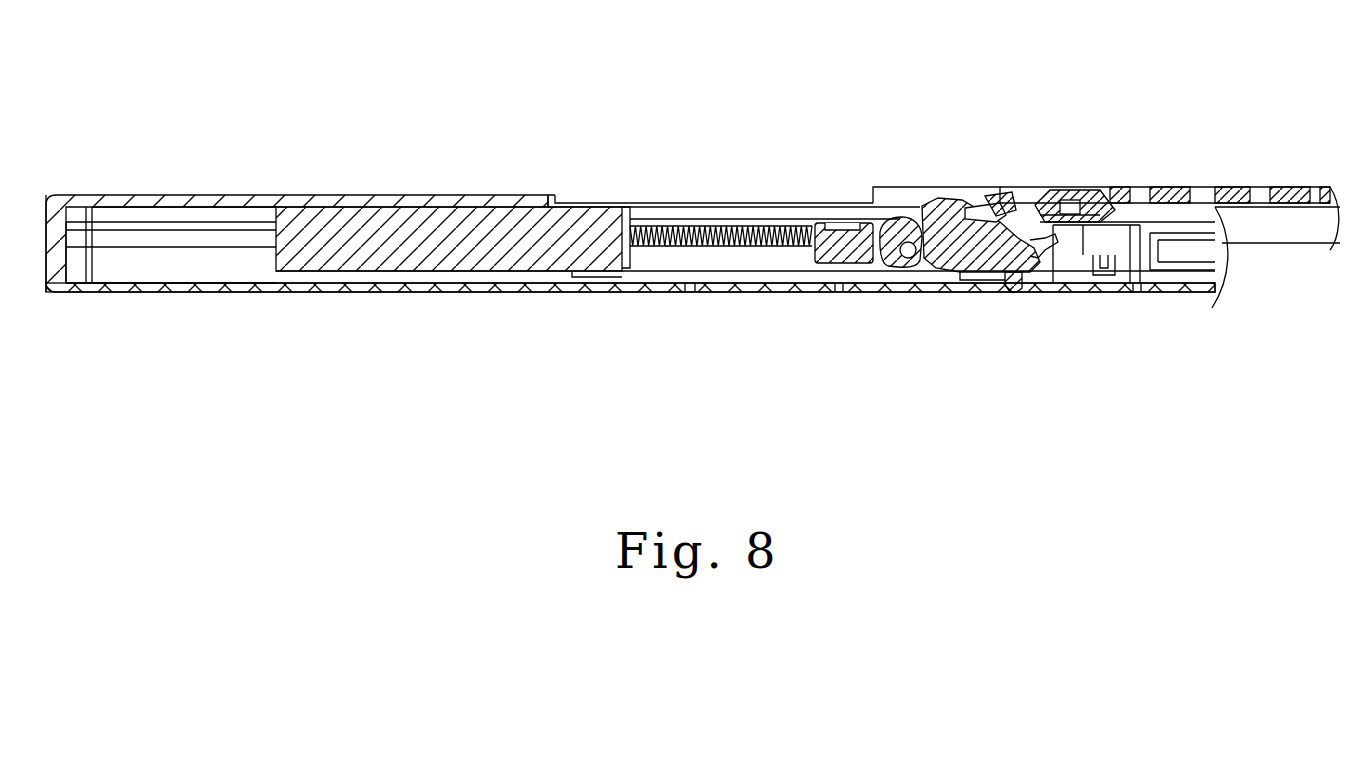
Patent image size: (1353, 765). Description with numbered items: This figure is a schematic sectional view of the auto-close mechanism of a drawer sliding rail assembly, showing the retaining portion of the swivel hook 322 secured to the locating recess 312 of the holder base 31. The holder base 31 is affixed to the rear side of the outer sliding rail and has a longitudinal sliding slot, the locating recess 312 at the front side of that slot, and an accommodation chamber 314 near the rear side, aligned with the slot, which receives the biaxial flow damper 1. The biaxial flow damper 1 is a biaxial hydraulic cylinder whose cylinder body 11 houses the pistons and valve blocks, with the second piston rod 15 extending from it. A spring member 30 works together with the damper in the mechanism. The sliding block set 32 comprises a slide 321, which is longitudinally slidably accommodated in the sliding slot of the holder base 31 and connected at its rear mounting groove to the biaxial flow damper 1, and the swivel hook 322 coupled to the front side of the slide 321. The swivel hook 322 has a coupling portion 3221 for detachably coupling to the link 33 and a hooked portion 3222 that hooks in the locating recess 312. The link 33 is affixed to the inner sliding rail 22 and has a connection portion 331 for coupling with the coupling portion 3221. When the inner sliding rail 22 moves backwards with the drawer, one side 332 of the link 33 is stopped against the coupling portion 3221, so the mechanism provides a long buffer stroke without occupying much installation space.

The biaxial flow damper 1 is at (292, 279).
The cylinder body 11 is at (395, 268).
The second piston rod 15 is at (157, 245).
The accommodation chamber 314 is at (200, 265).
The spring member 30 is at (688, 243).
The holder base 31 is at (678, 205).
The locating recess 312 is at (998, 277).
The sliding block set 32 is at (825, 100).
The slide 321 is at (820, 225).
The swivel hook 322 is at (1020, 200).
The coupling portion 3221 is at (977, 205).
The hooked portion 3222 is at (1020, 275).
The link 33 is at (1001, 196).
The connection portion 331 is at (1035, 190).
The one side of the link 332 is at (925, 205).
The inner sliding rail 22 is at (1310, 243).